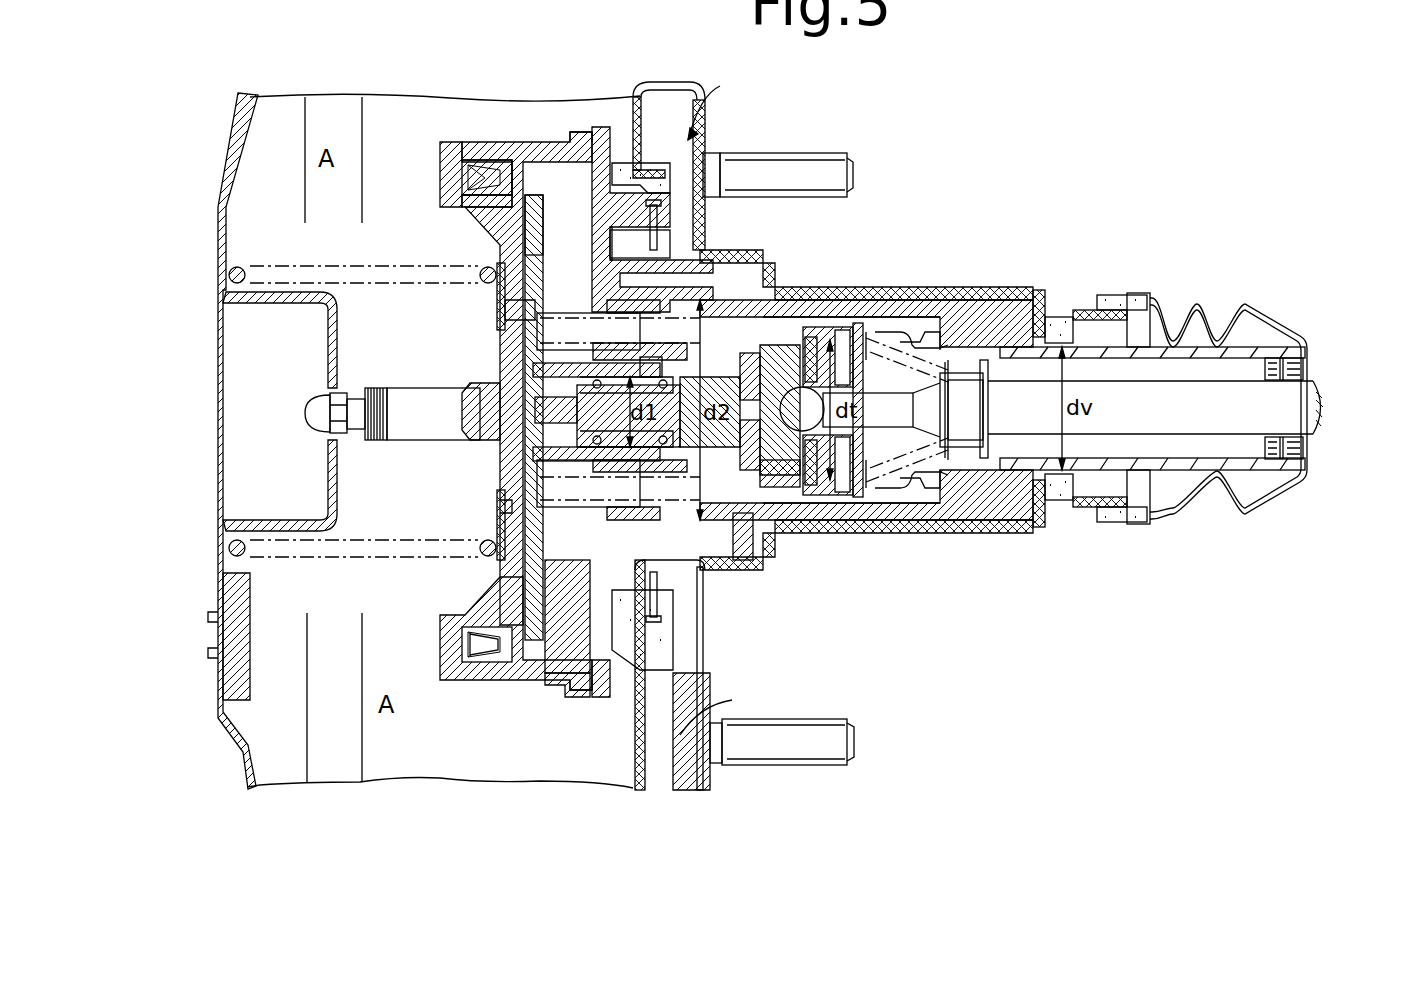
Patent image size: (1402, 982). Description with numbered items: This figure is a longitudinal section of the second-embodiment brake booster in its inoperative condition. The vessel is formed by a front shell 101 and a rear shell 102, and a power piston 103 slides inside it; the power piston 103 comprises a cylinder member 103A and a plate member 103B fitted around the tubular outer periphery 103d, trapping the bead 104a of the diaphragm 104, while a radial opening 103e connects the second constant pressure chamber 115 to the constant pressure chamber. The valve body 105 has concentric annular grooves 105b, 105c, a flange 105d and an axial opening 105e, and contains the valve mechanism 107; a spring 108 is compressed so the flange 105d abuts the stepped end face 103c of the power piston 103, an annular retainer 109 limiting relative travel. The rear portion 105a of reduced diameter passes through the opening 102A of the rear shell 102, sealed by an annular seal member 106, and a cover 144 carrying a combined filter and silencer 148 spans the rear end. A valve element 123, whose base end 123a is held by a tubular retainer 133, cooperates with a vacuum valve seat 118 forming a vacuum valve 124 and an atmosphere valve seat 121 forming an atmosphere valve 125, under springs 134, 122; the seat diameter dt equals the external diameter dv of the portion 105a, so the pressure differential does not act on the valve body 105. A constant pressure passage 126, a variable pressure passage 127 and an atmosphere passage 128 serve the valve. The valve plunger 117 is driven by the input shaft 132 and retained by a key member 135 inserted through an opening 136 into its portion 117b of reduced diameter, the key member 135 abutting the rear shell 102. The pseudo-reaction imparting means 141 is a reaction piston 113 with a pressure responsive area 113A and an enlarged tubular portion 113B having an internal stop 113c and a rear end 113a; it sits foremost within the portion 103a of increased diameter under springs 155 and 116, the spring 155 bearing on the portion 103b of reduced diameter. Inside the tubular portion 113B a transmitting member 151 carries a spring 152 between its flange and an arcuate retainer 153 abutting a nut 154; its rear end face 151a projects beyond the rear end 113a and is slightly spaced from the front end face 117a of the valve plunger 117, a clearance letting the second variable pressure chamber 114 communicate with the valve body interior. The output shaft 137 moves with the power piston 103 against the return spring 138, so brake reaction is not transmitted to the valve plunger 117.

The front shell 101 is at (245, 160).
The rear shell 102 is at (725, 110).
The opening 102A is at (1105, 312).
The power piston 103 is at (505, 140).
The cylinder member 103A is at (460, 158).
The plate member 103B is at (634, 102).
The portion of increased diameter 103a is at (490, 668).
The portion of reduced diameter 103b is at (660, 600).
The stepped end face 103c is at (610, 700).
The tubular outer periphery 103d is at (660, 632).
The radial opening 103e is at (575, 132).
The diaphragm 104 is at (660, 84).
The bead 104a is at (660, 175).
The valve body 105 is at (828, 300).
The rear portion of reduced diameter 105a is at (1140, 347).
The annular groove 105b is at (780, 300).
The annular groove 105c is at (735, 263).
The flange 105d is at (610, 245).
The axial opening 105e is at (825, 512).
The annular seal member 106 is at (1058, 317).
The valve mechanism 107 is at (870, 510).
The spring 108 is at (712, 200).
The annular retainer 109 is at (662, 228).
The reaction piston 113 is at (532, 645).
The pressure responsive area 113A is at (547, 216).
The tubular portion 113B is at (488, 445).
The rear end of tubular portion 113a is at (668, 480).
The stop 113c is at (560, 640).
The second variable pressure chamber 114 is at (485, 620).
The second constant pressure chamber 115 is at (575, 680).
The spring 116 is at (497, 310).
The valve plunger 117 is at (804, 409).
The front end face 117a is at (745, 525).
The portion of reduced diameter 117b is at (790, 490).
The vacuum valve seat 118 is at (830, 330).
The atmosphere valve seat 121 is at (852, 335).
The spring 122 is at (964, 409).
The valve element 123 is at (885, 490).
The base end 123a is at (935, 490).
The vacuum valve 124 is at (858, 325).
The atmosphere valve 125 is at (855, 375).
The constant pressure passage 126 is at (810, 335).
The variable pressure passage 127 is at (780, 480).
The atmosphere passage 128 is at (997, 525).
The input shaft 132 is at (1185, 480).
The tubular retainer 133 is at (930, 455).
The spring 134 is at (940, 380).
The key member 135 is at (755, 475).
The opening 136 is at (752, 520).
The output shaft 137 is at (402, 398).
The return spring 138 is at (300, 268).
The pseudo-reaction imparting means 141 is at (500, 512).
The cover 144 is at (1252, 312).
The combined filter and silencer 148 is at (1305, 365).
The transmitting member 151 is at (535, 368).
The rear end face 151a is at (645, 365).
The spring 152 is at (600, 447).
The arcuate retainer 153 is at (552, 425).
The nut 154 is at (505, 316).
The spring 155 is at (578, 318).